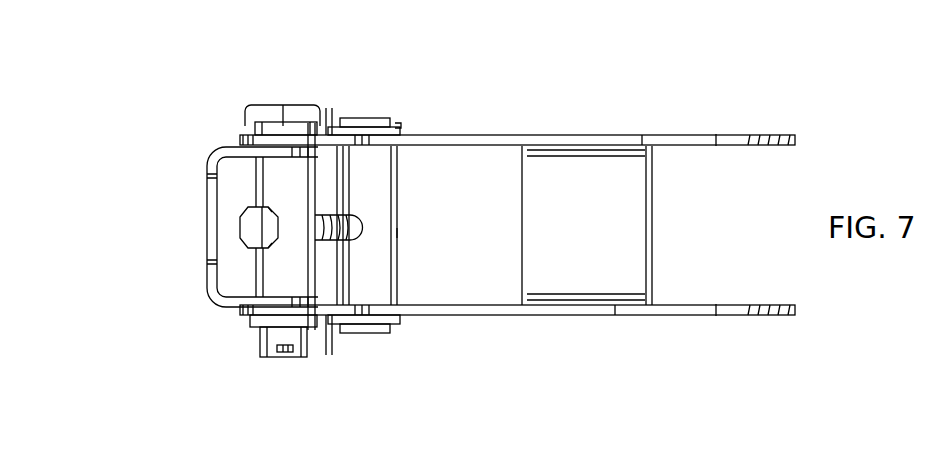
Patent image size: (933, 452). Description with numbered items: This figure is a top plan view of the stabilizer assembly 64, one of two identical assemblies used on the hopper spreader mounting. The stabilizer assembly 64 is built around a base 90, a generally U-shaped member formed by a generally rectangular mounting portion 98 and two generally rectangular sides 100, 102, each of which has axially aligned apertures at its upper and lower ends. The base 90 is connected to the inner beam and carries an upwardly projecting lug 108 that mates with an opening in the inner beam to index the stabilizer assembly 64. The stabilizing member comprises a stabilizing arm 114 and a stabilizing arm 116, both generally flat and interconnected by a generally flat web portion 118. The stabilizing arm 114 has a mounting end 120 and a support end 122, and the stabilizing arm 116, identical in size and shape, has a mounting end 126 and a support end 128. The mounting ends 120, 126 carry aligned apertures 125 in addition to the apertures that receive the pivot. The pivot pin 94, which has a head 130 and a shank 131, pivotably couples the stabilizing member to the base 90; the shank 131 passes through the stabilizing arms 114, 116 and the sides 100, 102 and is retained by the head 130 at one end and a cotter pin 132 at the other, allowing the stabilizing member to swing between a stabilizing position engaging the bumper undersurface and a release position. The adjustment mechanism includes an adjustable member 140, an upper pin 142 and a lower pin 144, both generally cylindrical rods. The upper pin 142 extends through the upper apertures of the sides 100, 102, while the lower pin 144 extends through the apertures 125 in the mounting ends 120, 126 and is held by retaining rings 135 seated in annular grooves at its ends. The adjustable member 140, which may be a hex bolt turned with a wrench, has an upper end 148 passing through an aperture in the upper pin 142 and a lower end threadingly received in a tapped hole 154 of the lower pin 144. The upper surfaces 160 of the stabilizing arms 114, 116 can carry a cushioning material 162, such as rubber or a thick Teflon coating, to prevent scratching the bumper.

The right stabilizer assembly 64 is at (520, 24).
The base 90 is at (205, 158).
The pivot pin 94 is at (212, 18).
The mounting portion 98 is at (209, 292).
The side 100 is at (243, 150).
The side 102 is at (235, 306).
The lug 108 is at (208, 225).
The stabilizing arm 114 is at (478, 310).
The stabilizing arm 116 is at (502, 140).
The web portion 118 is at (632, 227).
The mounting end 120 is at (329, 355).
The support end 122 is at (722, 316).
The apertures 125 is at (399, 152).
The mounting end 126 is at (323, 130).
The support end 128 is at (723, 138).
The head 130 is at (268, 110).
The shank 131 is at (262, 356).
The cotter pin 132 is at (281, 352).
The retaining rings 135 is at (378, 122).
The adjustable member 140 is at (342, 237).
The upper pin 142 is at (304, 278).
The lower pin 144 is at (382, 192).
The upper end 148 is at (247, 232).
The tapped hole 154 is at (398, 232).
The upper surfaces 160 is at (718, 131).
The cushioning material 162 is at (643, 127).